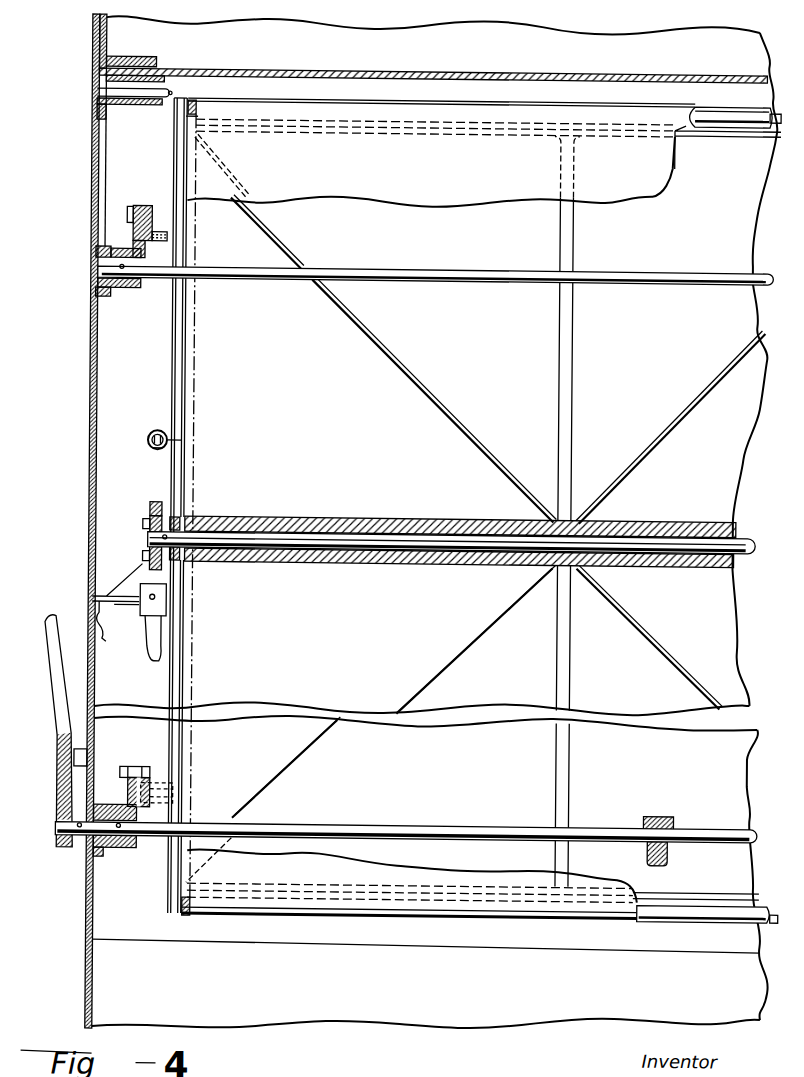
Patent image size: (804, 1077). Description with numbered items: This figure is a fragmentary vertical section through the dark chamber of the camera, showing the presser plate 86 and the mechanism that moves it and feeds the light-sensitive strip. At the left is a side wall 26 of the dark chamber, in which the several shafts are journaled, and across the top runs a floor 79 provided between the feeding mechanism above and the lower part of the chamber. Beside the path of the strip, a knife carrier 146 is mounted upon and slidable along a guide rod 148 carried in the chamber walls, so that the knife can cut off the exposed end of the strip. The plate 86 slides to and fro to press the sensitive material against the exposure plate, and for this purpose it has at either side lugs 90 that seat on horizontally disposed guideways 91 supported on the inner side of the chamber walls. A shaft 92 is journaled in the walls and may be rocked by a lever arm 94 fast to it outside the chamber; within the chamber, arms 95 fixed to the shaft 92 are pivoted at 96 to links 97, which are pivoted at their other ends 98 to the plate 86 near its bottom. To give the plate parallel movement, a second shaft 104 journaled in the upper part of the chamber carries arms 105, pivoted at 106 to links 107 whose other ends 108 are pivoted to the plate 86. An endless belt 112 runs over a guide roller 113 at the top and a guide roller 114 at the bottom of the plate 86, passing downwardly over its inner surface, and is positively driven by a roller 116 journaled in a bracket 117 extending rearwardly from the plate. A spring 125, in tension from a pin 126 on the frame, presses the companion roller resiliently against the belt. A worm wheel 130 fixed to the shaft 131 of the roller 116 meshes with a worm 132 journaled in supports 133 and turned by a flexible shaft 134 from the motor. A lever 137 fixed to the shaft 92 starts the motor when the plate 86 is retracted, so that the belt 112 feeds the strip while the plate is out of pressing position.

The side wall 26 is at (88, 474).
The floor 79 is at (367, 68).
The guide rod 148 is at (156, 88).
The carrier 146 is at (127, 106).
The guide roller 113 is at (191, 96).
The endless belt 112 is at (447, 186).
The shaft 104 is at (431, 265).
The plate 86 is at (556, 353).
The arm 105 is at (108, 236).
The pivot 106 is at (125, 212).
The link 107 is at (153, 204).
The pivot 108 is at (167, 238).
The spring 125 is at (159, 402).
The pin 126 is at (159, 451).
The worm wheel 130 is at (157, 499).
The worm 132 is at (147, 532).
The support 133 is at (150, 509).
The bracket 117 is at (177, 512).
The shaft 131 is at (343, 524).
The roller 116 is at (423, 519).
The lug 90 is at (124, 582).
The guideway 91 is at (104, 634).
The flexible shaft 134 is at (153, 638).
The lever arm 94 is at (61, 675).
The arm 95 is at (130, 797).
The pivot 96 is at (122, 766).
The link 97 is at (152, 774).
The pivot 98 is at (169, 780).
The shaft 92 is at (346, 825).
The lever 137 is at (682, 788).
The guide roller 114 is at (186, 911).